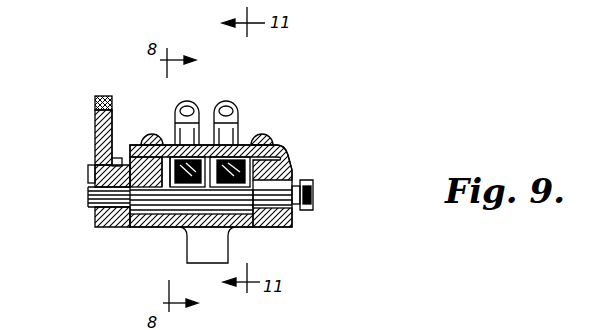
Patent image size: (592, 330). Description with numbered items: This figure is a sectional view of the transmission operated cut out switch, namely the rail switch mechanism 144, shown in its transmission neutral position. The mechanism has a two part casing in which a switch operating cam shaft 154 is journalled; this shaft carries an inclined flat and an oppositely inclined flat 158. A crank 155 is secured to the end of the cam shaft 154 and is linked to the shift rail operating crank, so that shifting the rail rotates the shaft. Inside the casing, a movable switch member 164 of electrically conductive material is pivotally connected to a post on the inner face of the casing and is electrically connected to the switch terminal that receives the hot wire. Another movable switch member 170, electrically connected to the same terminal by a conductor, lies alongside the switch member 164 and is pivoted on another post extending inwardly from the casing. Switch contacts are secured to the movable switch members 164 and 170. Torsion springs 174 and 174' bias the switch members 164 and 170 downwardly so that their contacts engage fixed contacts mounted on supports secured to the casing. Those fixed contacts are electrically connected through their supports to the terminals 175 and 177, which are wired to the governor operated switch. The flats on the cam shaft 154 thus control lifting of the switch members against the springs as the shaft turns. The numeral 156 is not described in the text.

The rail switch mechanism 144 is at (320, 105).
The switch operating cam shaft 154 is at (150, 207).
The crank 155 is at (95, 125).
The valve spool 156 is at (180, 190).
The oppositely inclined flat 158 is at (233, 187).
The movable switch member 164 is at (176, 158).
The movable switch member 170 is at (270, 147).
The torsion spring 174 is at (142, 128).
The torsion spring 174' is at (282, 127).
The terminal 175 is at (200, 100).
The terminal 177 is at (234, 100).